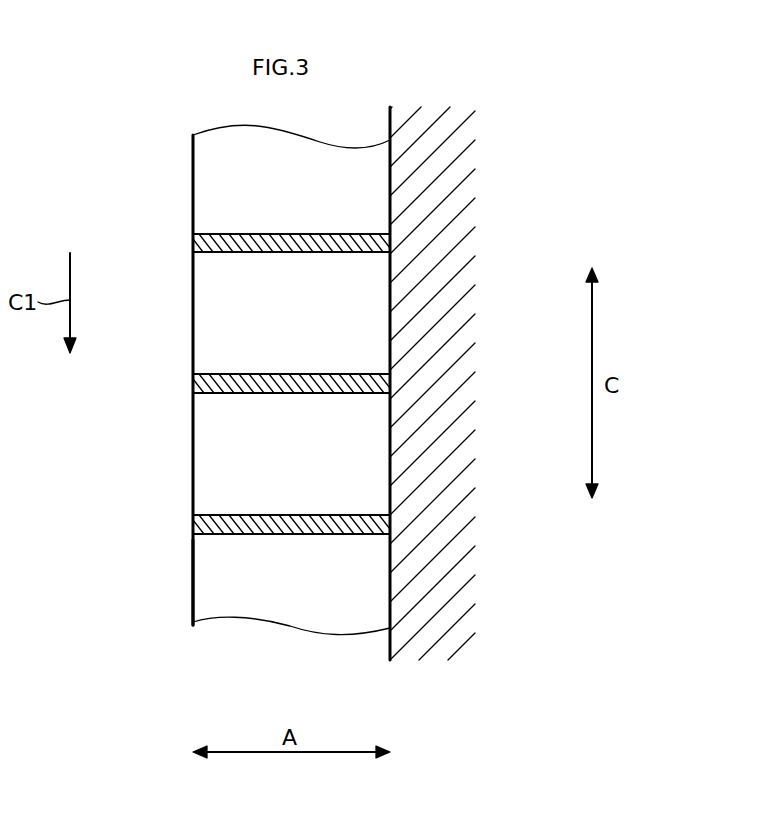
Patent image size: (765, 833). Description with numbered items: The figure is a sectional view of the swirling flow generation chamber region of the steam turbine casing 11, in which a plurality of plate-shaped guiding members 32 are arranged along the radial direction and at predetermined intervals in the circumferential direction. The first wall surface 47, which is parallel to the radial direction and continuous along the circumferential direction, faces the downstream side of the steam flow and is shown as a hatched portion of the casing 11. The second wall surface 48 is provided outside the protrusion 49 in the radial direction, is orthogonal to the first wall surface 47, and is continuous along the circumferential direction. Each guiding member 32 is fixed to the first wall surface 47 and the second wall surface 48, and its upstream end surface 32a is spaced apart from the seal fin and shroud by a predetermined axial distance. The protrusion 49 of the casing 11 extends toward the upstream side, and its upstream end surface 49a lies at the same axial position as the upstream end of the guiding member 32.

The casing 11 is at (529, 574).
The guiding member 32 is at (342, 230).
The end surface 32a is at (193, 240).
The first wall surface 47 is at (392, 432).
The second wall surface 48 is at (240, 592).
The protrusion 49 is at (193, 455).
The upstream end surface 49a is at (193, 580).